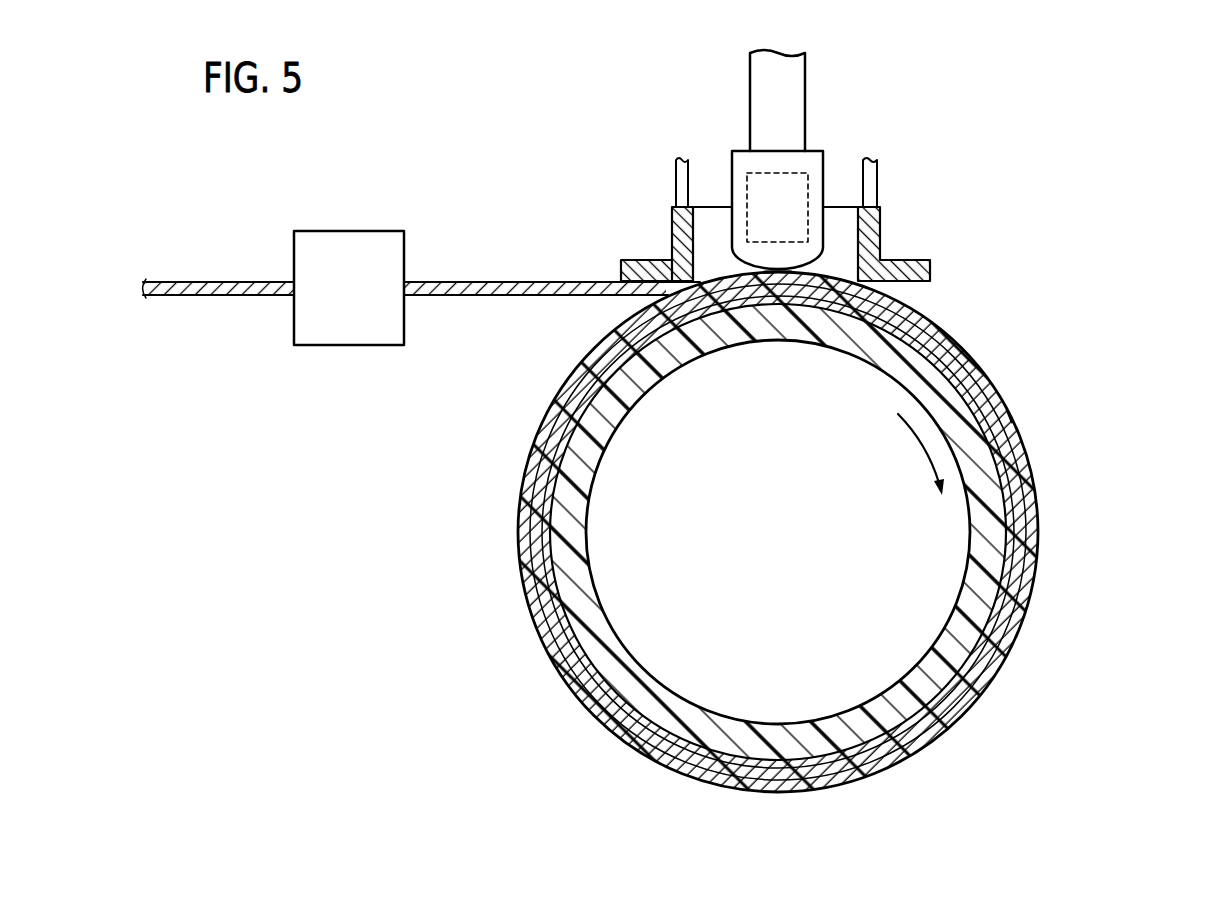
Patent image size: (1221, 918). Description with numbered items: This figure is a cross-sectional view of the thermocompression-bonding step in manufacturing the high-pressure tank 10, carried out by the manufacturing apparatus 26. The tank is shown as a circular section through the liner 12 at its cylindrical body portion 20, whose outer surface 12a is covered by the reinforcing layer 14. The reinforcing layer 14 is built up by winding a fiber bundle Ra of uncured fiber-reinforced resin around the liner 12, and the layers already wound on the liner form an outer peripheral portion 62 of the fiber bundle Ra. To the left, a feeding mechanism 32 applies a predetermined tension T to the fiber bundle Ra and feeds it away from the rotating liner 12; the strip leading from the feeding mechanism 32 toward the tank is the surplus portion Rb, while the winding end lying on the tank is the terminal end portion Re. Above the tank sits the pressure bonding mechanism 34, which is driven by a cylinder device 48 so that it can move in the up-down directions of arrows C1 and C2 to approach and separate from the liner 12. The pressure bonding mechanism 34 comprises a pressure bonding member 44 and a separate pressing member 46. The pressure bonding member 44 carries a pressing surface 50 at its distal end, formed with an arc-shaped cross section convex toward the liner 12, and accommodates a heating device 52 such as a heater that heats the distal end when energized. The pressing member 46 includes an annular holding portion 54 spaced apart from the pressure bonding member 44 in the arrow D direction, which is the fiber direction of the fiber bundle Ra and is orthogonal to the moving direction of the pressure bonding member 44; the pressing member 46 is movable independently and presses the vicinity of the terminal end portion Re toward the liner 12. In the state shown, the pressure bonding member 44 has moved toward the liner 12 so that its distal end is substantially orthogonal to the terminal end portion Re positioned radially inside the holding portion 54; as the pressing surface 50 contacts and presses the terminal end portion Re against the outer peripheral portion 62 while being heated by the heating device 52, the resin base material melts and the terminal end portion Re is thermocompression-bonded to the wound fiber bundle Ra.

The high-pressure tank 10 is at (780, 532).
The liner 12 is at (730, 532).
The body portion 20 is at (730, 532).
The outer surface 12a is at (562, 609).
The reinforcing layer 14 is at (1026, 639).
The manufacturing apparatus 26 is at (422, 282).
The feeding mechanism 32 is at (343, 242).
The pressure bonding mechanism 34 is at (752, 165).
The pressure bonding member 44 is at (836, 184).
The pressing member 46 is at (747, 219).
The cylinder device 48 is at (792, 83).
The pressing surface 50 is at (780, 274).
The heating device 52 is at (770, 173).
The annular holding portion 54 is at (632, 272).
The outer peripheral portion 62 is at (577, 376).
The fiber bundle Ra is at (1007, 408).
The surplus portion Rb is at (477, 297).
The terminal end portion Re is at (721, 258).
The tension T is at (523, 263).
The arrow D direction D is at (351, 448).
The arrow C1 direction C1 is at (1185, 498).
The arrow C2 direction C2 is at (1186, 481).